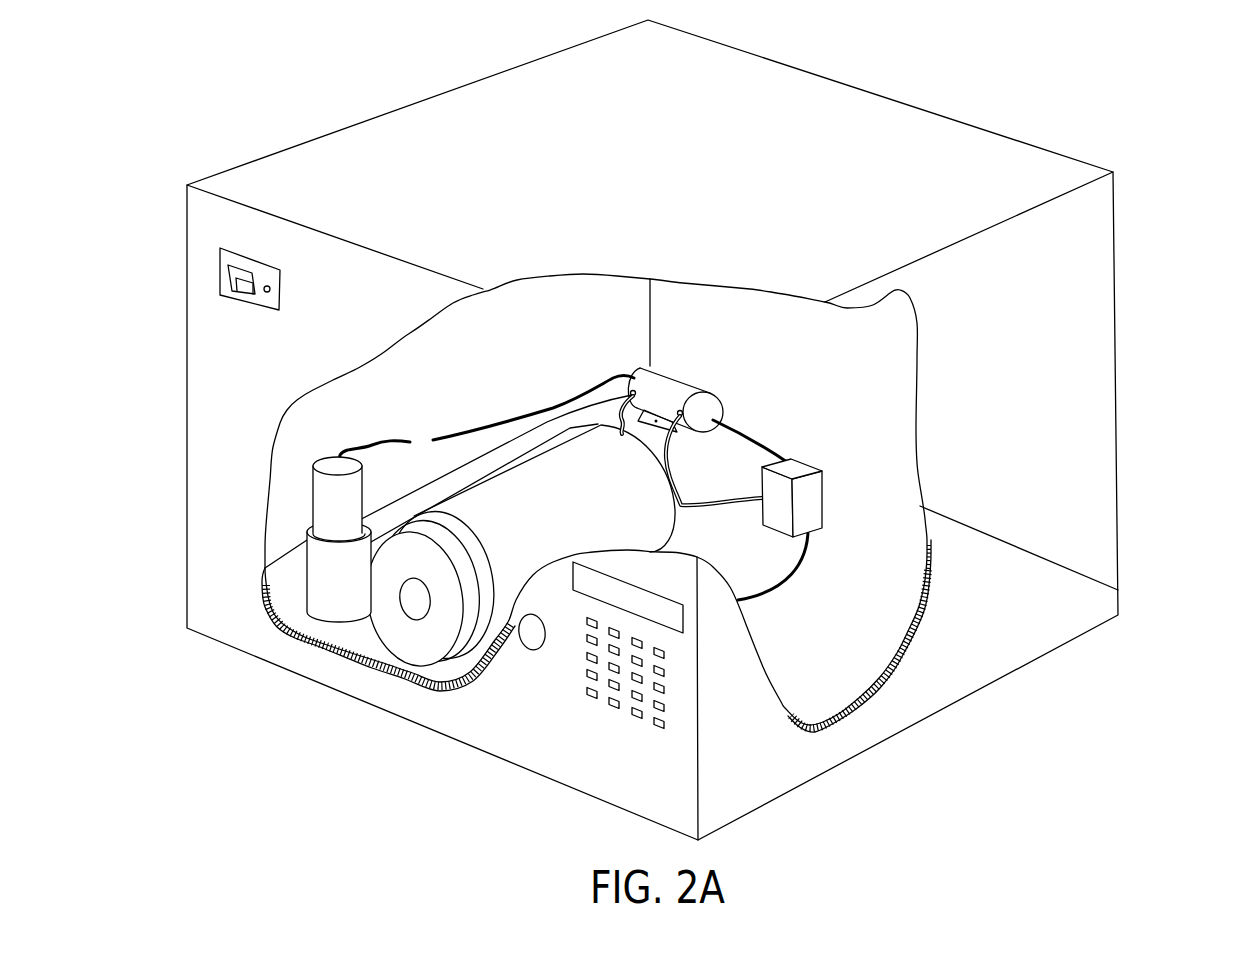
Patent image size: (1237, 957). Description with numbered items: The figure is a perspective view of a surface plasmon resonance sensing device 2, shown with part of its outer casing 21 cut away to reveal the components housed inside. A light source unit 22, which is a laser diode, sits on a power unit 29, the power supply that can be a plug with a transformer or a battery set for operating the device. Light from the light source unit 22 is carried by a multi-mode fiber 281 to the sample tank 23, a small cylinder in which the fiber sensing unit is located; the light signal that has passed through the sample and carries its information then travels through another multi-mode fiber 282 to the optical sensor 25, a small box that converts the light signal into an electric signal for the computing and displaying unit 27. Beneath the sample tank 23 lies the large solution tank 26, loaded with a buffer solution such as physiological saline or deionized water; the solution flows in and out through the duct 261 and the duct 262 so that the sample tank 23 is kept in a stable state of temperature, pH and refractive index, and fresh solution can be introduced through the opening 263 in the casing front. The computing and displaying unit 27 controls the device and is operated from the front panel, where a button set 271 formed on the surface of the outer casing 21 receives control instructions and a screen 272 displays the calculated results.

The surface plasmon resonance sensing device 2 is at (695, 446).
The outer casing 21 is at (996, 140).
The light source unit 22 is at (323, 499).
The sample tank 23 is at (673, 388).
The optical sensor 25 is at (813, 500).
The solution tank 26 is at (417, 637).
The duct 261 is at (612, 376).
The duct 262 is at (668, 455).
The opening 263 is at (527, 632).
The computing and displaying unit 27 is at (741, 717).
The button set 271 is at (667, 723).
The screen 272 is at (675, 617).
The multi-mode fiber 281 is at (553, 410).
The multi-mode fiber 282 is at (720, 400).
The power unit 29 is at (328, 590).